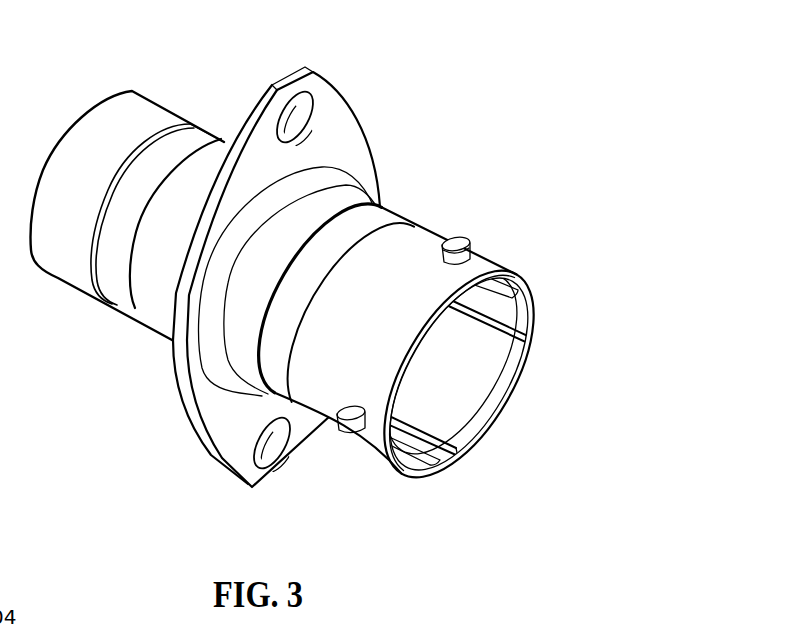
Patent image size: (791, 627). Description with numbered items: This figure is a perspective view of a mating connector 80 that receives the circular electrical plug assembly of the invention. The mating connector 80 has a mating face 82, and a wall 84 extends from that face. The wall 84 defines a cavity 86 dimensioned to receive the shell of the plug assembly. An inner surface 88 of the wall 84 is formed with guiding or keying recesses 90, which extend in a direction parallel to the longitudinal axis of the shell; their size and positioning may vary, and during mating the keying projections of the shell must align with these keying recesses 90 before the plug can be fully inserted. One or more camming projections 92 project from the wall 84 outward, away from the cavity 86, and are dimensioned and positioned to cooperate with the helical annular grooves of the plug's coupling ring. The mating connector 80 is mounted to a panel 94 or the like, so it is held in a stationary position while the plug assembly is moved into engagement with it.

The mating connector 80 is at (337, 288).
The mating face 82 is at (528, 370).
The wall 84 is at (333, 355).
The cavity 86 is at (498, 384).
The inner surface 88 is at (505, 400).
The keying recesses 90 is at (528, 336).
The camming projections 92 is at (466, 238).
The panel 94 is at (347, 93).